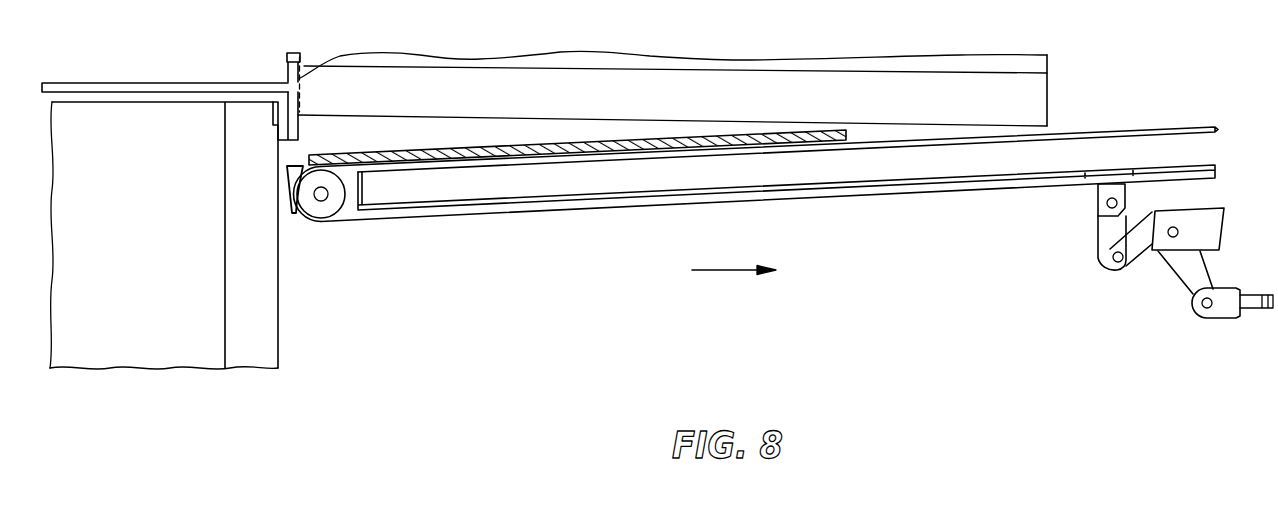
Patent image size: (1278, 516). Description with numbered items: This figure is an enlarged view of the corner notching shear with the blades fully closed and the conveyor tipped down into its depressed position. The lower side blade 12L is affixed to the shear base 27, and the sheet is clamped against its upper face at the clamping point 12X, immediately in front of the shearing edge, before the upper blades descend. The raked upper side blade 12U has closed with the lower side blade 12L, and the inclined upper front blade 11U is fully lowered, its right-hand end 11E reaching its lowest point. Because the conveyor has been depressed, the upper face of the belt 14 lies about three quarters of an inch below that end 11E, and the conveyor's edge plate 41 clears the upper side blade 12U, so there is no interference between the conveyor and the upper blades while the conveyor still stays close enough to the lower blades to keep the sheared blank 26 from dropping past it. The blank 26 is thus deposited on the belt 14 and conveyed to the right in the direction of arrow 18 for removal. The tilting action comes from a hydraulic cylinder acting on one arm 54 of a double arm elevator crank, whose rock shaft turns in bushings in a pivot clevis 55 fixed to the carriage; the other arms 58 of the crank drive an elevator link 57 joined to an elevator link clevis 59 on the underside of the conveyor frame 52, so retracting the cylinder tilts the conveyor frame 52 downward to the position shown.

The base 27 is at (137, 141).
The upper side blade 12U is at (290, 52).
The clamping point 12X is at (282, 85).
The lower side blade 12L is at (271, 123).
The edge plate 41 is at (290, 166).
The upper front blade 11U is at (737, 87).
The right-hand end of upper front blade 11E is at (1047, 112).
The blank 26 is at (382, 153).
The belt 14 is at (1073, 128).
The conveyor frame 52 is at (915, 170).
The arrow 18 is at (723, 270).
The elevator link clevis 59 is at (1108, 193).
The elevator link 57 is at (1108, 238).
The other arms of crank 58 is at (1140, 253).
The pivot clevis 55 is at (1205, 243).
The arm of elevator crank 54 is at (1195, 267).